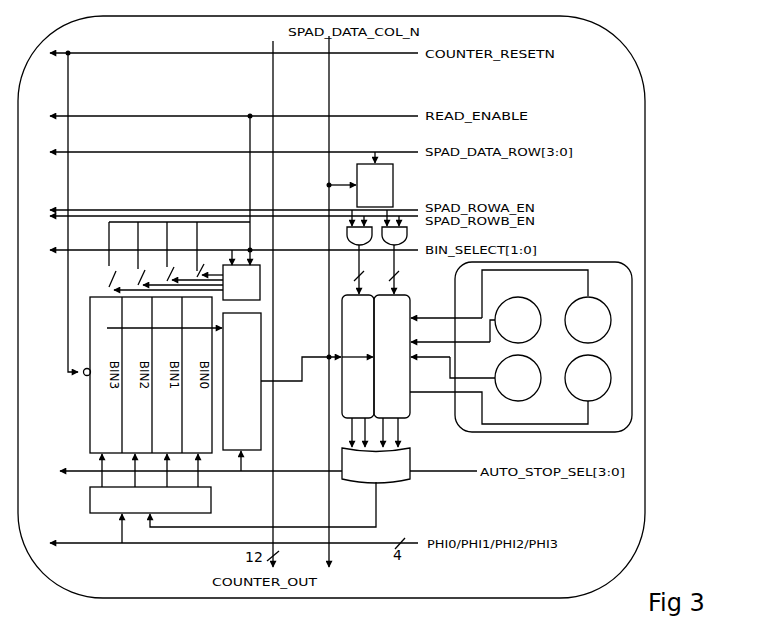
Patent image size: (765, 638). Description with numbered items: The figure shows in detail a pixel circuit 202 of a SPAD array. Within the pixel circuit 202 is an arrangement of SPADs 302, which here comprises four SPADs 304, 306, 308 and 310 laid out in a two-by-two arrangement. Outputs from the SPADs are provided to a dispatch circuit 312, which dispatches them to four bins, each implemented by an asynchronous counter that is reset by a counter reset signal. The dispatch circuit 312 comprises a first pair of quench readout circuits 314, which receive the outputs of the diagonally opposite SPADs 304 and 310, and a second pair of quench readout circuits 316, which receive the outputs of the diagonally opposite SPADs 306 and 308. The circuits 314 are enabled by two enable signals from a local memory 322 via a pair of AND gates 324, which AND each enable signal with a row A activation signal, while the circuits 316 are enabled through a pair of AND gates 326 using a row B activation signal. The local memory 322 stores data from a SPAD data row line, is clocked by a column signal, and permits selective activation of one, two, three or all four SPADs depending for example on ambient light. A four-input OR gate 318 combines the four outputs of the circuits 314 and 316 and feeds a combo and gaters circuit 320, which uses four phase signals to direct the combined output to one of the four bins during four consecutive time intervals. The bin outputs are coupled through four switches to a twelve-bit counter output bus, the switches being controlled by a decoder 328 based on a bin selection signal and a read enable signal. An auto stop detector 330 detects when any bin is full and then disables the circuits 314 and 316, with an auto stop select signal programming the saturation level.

The pixel circuit 202 is at (593, 55).
The arrangement of SPADs 302 is at (551, 347).
The SPAD 304 is at (550, 294).
The SPAD 306 is at (617, 294).
The SPAD 308 is at (550, 356).
The SPAD 310 is at (600, 369).
The dispatch circuit 312 is at (373, 337).
The first pair of quench readout circuits 314 is at (355, 322).
The second pair of quench readout circuits 316 is at (390, 311).
The four-input OR gate 318 is at (405, 460).
The combo and gaters circuit 320 is at (212, 489).
The local memory 322 is at (393, 185).
The pair of AND gates 324 is at (347, 236).
The pair of AND gates 326 is at (407, 235).
The decoder 328 is at (261, 297).
The auto stop detector 330 is at (257, 439).